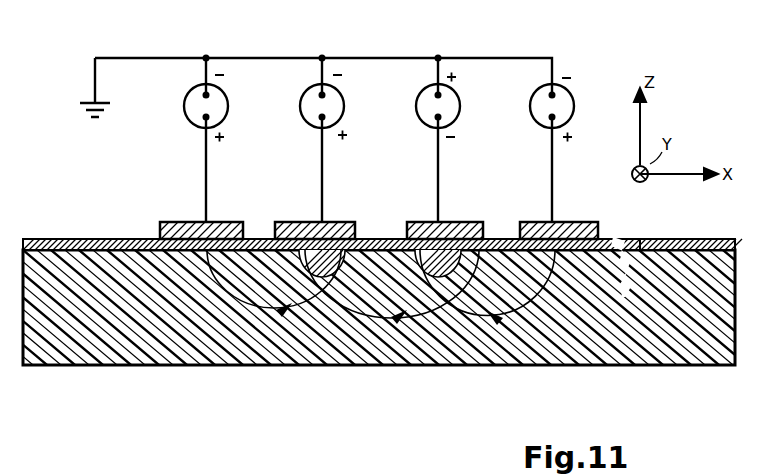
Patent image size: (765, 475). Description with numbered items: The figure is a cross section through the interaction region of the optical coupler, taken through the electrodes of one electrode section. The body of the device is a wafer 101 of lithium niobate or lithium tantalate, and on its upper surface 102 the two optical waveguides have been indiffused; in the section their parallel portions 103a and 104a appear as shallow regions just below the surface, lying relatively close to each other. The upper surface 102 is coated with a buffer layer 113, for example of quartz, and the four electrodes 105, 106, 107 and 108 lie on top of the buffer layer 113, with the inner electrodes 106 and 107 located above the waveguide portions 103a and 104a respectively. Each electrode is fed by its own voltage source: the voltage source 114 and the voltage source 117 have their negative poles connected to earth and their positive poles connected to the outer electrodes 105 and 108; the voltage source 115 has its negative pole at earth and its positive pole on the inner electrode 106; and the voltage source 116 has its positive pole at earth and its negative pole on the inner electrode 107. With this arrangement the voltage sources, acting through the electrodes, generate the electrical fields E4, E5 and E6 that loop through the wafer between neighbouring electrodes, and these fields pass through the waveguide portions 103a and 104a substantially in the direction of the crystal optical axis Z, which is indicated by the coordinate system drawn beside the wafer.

The wafer 101 is at (709, 366).
The upper surface 102 is at (699, 243).
The buffer layer 113 is at (56, 243).
The electrode 105 is at (173, 223).
The electrode 106 is at (295, 222).
The electrode 107 is at (468, 222).
The electrode 108 is at (583, 222).
The parallel portion of waveguide 103a is at (341, 278).
The parallel portion of waveguide 104a is at (460, 258).
The voltage source 114 is at (217, 100).
The voltage source 115 is at (340, 100).
The voltage source 116 is at (450, 102).
The voltage source 117 is at (568, 100).
The electrical field E4 is at (248, 304).
The electrical field E5 is at (541, 305).
The electrical field E6 is at (397, 318).